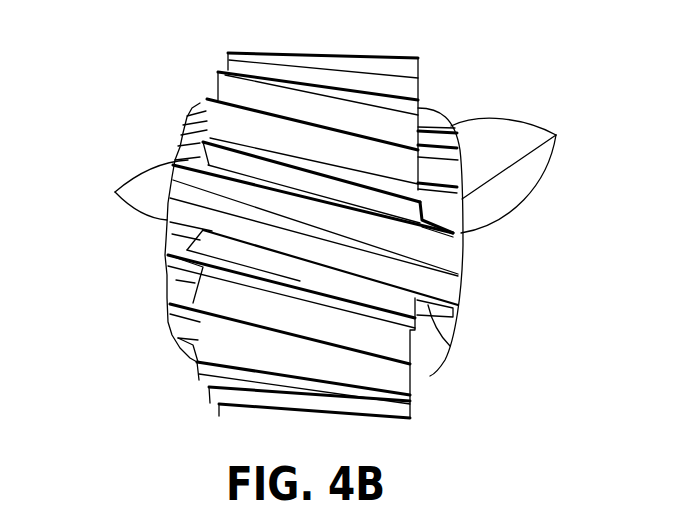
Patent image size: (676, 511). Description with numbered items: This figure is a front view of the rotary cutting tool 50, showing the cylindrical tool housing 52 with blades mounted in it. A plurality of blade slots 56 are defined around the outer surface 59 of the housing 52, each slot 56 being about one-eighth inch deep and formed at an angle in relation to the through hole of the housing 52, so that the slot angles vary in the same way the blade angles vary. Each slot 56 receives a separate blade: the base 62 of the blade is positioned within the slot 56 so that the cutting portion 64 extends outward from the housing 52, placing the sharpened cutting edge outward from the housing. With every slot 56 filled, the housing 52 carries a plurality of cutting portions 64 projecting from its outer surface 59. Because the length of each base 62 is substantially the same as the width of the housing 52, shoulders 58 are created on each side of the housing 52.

The rotary cutting tool 50 is at (307, 241).
The tool housing 52 is at (403, 239).
The blade slots 56 is at (521, 175).
The shoulders 58 is at (203, 86).
The outer surface 59 is at (181, 347).
The base 62 is at (489, 352).
The cutting portion 64 is at (340, 53).